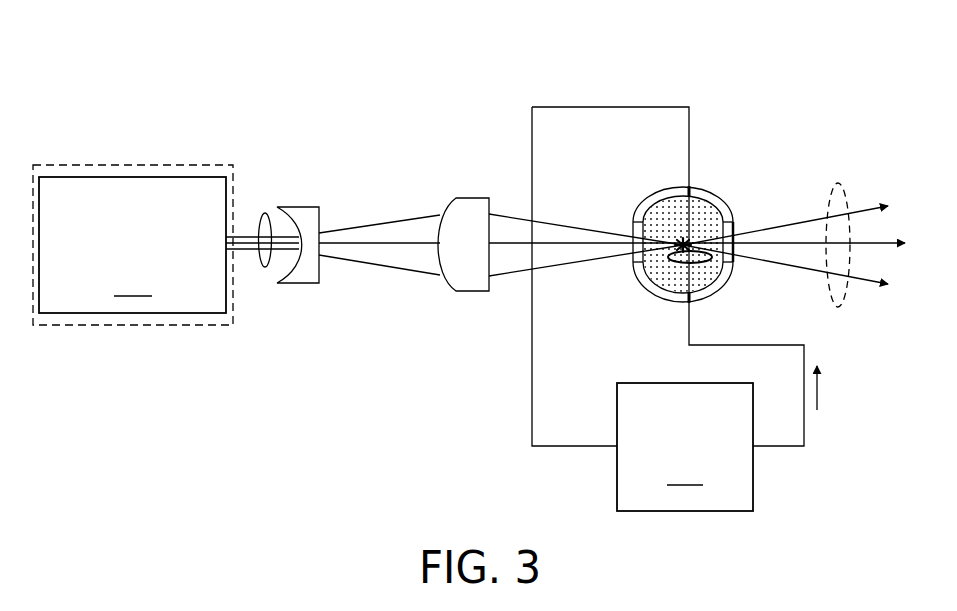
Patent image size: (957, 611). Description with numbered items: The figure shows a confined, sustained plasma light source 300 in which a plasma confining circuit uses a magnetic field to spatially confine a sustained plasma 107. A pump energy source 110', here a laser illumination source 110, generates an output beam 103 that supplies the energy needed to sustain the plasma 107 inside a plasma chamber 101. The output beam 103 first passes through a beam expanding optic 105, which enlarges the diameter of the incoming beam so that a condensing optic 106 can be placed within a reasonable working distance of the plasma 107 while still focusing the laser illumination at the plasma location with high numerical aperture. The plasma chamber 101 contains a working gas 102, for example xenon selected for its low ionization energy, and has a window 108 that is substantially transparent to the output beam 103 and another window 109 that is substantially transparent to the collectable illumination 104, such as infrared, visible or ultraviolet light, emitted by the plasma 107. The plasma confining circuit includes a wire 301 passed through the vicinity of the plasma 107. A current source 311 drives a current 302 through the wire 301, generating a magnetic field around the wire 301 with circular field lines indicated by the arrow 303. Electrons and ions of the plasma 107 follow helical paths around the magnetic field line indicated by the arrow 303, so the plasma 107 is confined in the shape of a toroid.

The CSP light source 300 is at (118, 126).
The laser illumination source 110 is at (132, 245).
The pump energy source 110' is at (133, 268).
The output beam 103 is at (262, 211).
The beam expanding optic 105 is at (296, 285).
The condensing optic 106 is at (470, 293).
The wire 301 is at (690, 140).
The plasma chamber 101 is at (652, 197).
The window 108 is at (637, 232).
The working gas 102 is at (655, 222).
The plasma 107 is at (692, 240).
The arrow indicating circular magnetic field lines 303 is at (672, 257).
The window 109 is at (733, 229).
The collectable illumination 104 is at (838, 183).
The current 302 is at (821, 390).
The current source 311 is at (685, 447).